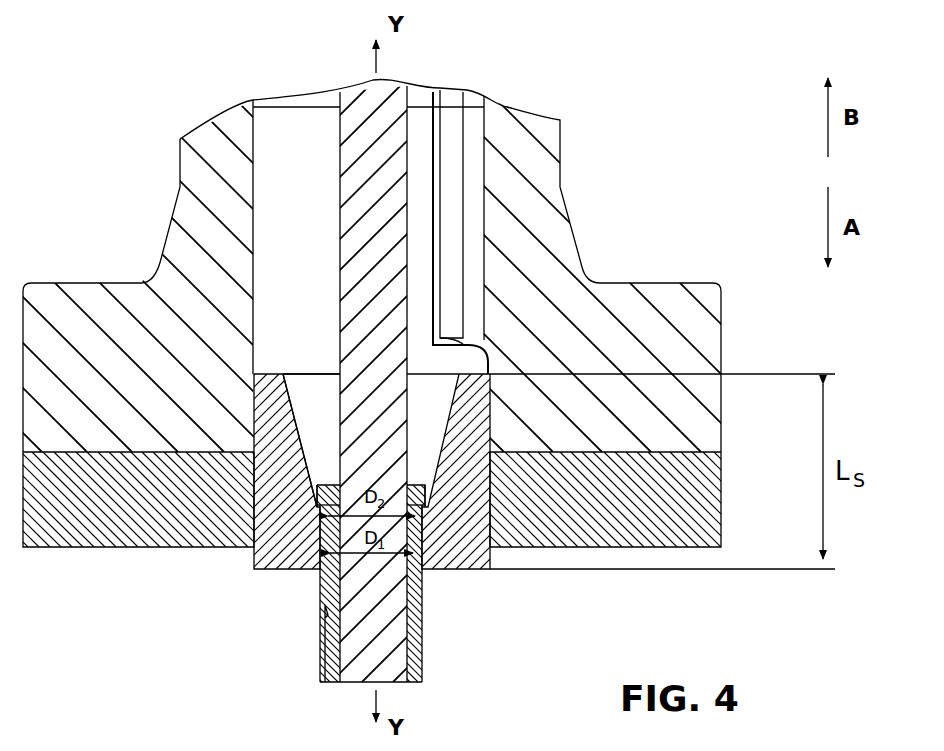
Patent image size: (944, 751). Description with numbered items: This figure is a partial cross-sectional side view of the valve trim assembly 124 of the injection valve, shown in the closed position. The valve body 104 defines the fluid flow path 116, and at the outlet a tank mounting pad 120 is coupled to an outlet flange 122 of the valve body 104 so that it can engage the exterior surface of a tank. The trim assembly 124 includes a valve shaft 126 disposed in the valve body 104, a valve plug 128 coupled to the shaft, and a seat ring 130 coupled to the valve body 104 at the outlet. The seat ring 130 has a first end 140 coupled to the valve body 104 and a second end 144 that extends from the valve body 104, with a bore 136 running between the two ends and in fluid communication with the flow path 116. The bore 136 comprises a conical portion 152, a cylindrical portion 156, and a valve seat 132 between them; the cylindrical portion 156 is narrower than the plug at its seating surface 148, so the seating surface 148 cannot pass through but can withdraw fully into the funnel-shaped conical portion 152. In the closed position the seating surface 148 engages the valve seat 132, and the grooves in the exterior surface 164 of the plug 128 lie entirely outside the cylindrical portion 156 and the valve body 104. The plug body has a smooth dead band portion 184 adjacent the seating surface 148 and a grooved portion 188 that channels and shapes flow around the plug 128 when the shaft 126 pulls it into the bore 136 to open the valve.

The valve body 104 is at (527, 145).
The fluid flow path 116 is at (275, 130).
The tank mounting pad 120 is at (702, 495).
The outlet flange 122 is at (698, 333).
The valve trim assembly 124 is at (100, 212).
The valve shaft 126 is at (397, 103).
The valve plug 128 is at (325, 603).
The seat ring 130 is at (492, 416).
The valve seat 132 is at (443, 343).
The bore 136 is at (470, 337).
The first end 140 is at (260, 375).
The second end 144 is at (473, 557).
The seating surface 148 is at (316, 500).
The conical portion 152 is at (303, 393).
The cylindrical portion 156 is at (333, 602).
The exterior surface 164 is at (422, 663).
The dead band portion 184 is at (313, 567).
The grooved portion 188 is at (323, 665).